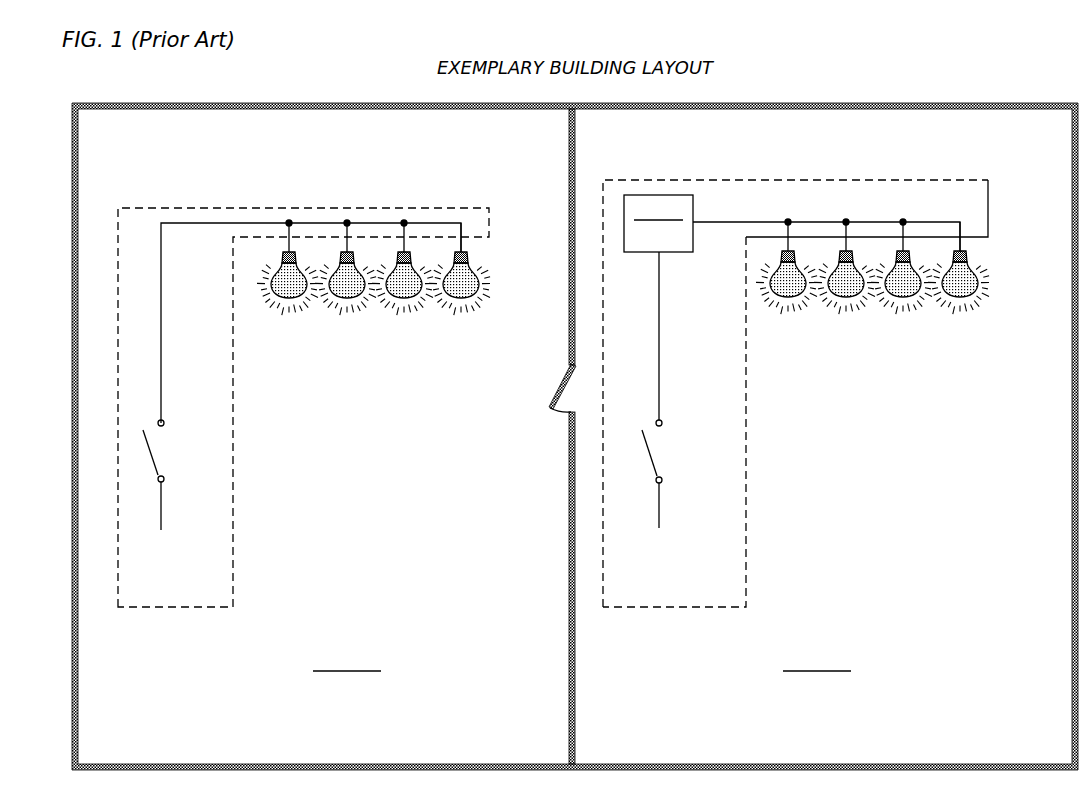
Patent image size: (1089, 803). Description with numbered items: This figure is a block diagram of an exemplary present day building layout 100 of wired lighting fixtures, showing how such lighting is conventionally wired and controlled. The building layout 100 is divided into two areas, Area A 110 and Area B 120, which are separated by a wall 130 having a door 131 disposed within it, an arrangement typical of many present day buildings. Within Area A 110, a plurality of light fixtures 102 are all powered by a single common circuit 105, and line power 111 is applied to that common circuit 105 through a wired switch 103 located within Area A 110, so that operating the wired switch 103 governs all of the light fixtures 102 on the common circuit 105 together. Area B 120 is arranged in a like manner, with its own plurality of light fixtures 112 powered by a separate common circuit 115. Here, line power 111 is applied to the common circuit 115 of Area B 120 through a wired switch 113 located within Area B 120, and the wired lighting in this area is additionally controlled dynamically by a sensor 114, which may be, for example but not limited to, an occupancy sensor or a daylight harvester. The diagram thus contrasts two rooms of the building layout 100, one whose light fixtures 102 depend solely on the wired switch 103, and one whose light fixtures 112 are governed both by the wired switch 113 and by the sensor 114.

The building layout 100 is at (1005, 74).
The light fixtures 102 is at (503, 280).
The wired switch 103 is at (176, 452).
The common circuit 105 is at (262, 207).
The Area A 110 is at (331, 698).
The line power 111 is at (410, 539).
The light fixtures 112 is at (1011, 280).
The wired switch 113 is at (676, 451).
The sensor 114 is at (670, 240).
The common circuit 115 is at (803, 180).
The Area B 120 is at (801, 698).
The wall 130 is at (577, 692).
The door 131 is at (561, 380).